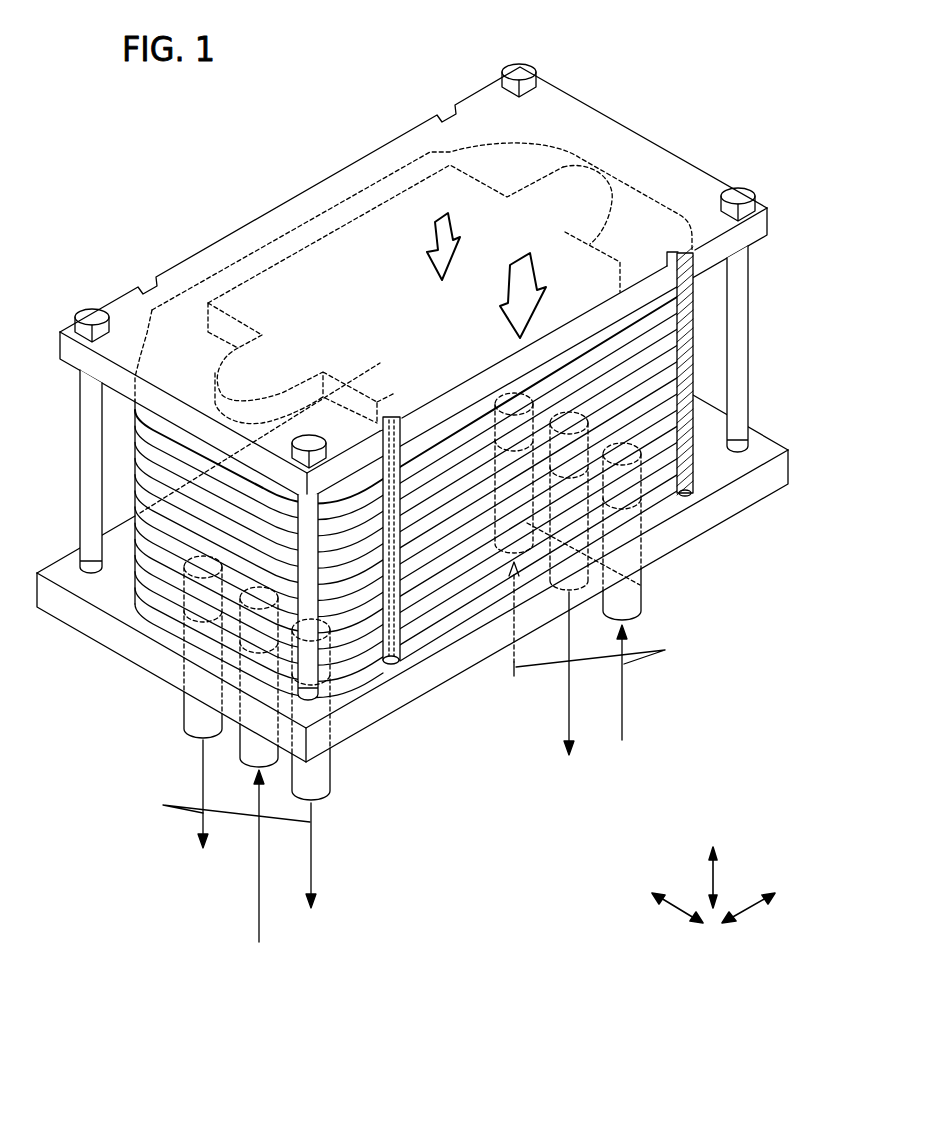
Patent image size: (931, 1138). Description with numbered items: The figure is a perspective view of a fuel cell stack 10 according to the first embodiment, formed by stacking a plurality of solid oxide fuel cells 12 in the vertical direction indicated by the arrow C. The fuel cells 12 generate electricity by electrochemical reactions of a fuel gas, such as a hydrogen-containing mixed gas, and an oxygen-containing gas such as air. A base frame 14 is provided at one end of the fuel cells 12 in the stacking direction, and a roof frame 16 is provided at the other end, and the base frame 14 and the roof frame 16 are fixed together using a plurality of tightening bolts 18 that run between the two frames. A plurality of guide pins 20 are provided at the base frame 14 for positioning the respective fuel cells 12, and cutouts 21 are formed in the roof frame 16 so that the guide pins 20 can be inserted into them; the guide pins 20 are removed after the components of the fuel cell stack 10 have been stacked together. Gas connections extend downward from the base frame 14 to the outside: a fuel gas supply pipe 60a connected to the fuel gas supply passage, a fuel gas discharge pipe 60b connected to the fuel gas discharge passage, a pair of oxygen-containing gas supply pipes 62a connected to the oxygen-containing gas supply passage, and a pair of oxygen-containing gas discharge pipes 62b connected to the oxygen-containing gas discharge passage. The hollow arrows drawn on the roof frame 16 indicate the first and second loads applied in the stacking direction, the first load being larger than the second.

The fuel cell stack 10 is at (181, 121).
The solid oxide fuel cells 12 is at (178, 568).
The base frame 14 is at (758, 505).
The roof frame 16 is at (668, 153).
The tightening bolts 18 is at (738, 307).
The guide pins 20 is at (379, 666).
The cutouts 21 is at (400, 432).
The fuel gas supply pipe 60a is at (245, 760).
The fuel gas discharge pipe 60b is at (578, 586).
The oxygen-containing gas supply pipes 62a is at (633, 593).
The oxygen-containing gas discharge pipes 62b is at (188, 737).